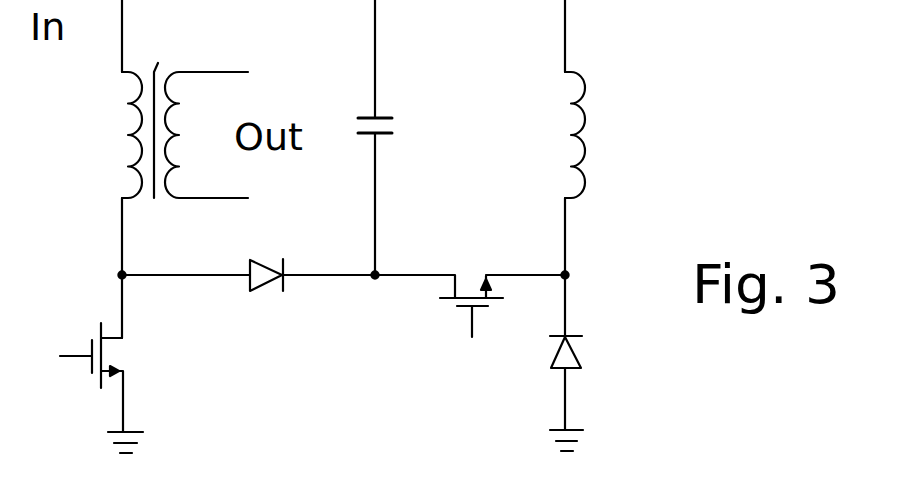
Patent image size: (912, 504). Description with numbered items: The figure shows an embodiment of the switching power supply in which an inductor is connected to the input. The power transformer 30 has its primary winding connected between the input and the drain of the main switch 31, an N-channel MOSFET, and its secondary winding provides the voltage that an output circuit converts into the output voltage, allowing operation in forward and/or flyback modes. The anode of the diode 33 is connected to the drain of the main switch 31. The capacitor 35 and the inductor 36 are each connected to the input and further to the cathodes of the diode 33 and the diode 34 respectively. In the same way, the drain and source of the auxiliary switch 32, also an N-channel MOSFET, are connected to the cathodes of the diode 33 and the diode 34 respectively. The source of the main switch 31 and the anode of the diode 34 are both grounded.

The power transformer 30 is at (158, 64).
The main switch 31 is at (101, 382).
The auxiliary switch 32 is at (443, 299).
The diode 33 is at (254, 291).
The diode 34 is at (557, 368).
The capacitor 35 is at (383, 133).
The inductor 36 is at (580, 177).